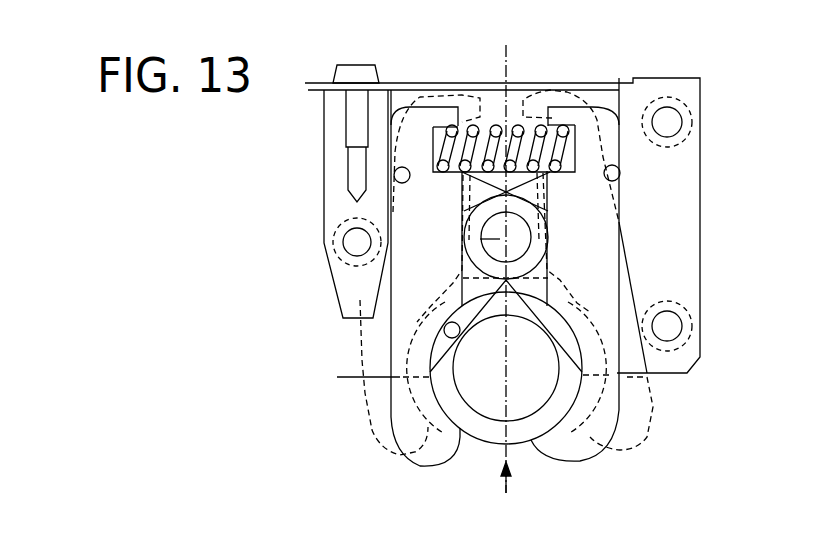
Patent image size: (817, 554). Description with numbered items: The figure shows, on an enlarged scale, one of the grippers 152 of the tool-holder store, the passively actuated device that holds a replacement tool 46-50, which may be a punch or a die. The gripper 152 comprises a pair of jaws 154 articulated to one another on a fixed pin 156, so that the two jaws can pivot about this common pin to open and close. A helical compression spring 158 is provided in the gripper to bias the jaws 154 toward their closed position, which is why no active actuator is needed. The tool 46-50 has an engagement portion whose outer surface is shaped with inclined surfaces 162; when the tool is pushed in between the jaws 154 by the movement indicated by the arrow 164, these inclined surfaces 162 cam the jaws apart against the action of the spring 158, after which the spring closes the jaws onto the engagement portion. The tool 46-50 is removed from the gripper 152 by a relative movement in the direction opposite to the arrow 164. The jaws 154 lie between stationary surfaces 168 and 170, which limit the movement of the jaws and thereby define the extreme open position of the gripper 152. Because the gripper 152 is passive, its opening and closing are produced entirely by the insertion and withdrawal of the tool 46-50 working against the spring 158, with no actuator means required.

The gripper 152 is at (380, 453).
The jaws 154 is at (397, 360).
The fixed pin 156 is at (497, 239).
The helical compression spring 158 is at (515, 122).
The inclined surfaces 162 is at (552, 325).
The arrow 164 is at (500, 475).
The stationary surface 168 is at (400, 166).
The stationary surface 170 is at (389, 272).
The die and punch (tool) 46-50 is at (530, 428).